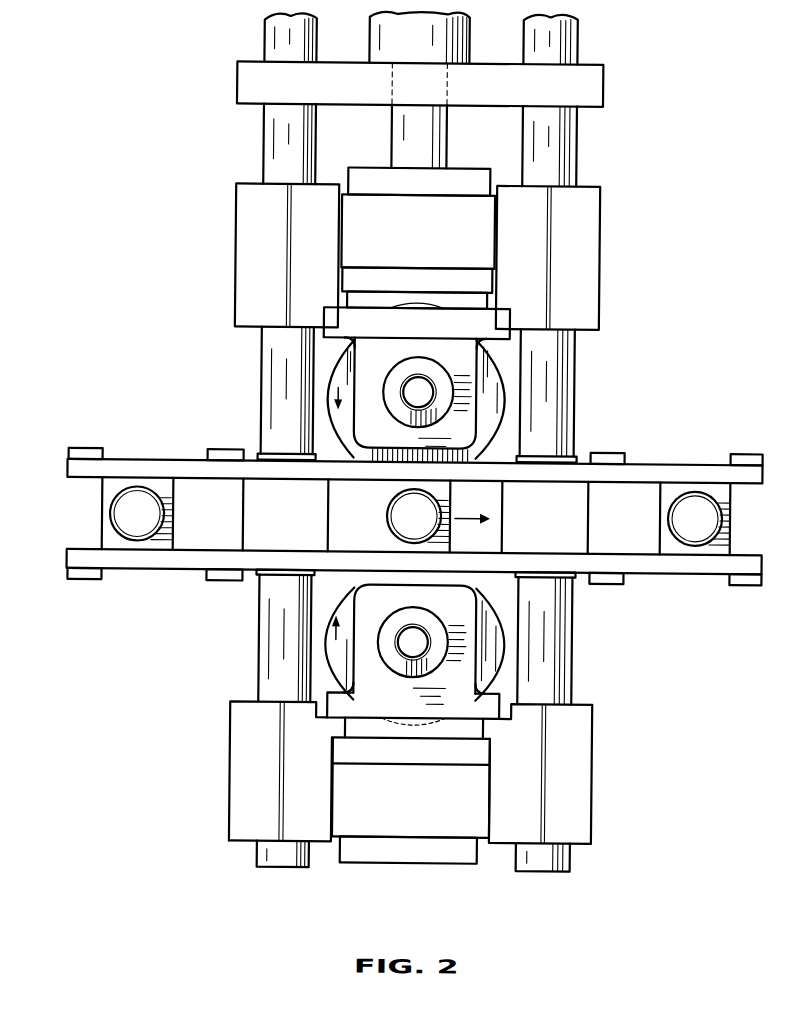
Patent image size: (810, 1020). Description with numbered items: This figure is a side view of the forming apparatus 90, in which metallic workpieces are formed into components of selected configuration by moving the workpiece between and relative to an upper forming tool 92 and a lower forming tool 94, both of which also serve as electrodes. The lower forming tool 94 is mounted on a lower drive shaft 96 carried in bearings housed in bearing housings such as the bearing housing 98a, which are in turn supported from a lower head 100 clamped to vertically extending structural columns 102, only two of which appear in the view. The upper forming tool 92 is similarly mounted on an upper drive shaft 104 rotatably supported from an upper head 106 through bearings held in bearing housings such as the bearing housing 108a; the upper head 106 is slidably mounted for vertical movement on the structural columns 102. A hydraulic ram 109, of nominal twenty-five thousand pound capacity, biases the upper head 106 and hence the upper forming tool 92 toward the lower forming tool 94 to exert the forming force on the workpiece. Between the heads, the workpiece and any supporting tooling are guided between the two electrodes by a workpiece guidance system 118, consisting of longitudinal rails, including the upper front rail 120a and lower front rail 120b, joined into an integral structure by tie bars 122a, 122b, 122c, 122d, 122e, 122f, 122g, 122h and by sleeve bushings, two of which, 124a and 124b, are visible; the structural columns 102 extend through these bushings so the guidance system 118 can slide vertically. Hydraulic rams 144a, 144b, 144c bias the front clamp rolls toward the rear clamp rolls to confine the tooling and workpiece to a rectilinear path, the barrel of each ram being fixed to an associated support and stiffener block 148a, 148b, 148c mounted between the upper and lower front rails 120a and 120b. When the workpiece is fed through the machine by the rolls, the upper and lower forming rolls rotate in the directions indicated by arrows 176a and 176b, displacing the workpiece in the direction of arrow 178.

The apparatus 90 is at (229, 211).
The upper forming tool 92 is at (501, 434).
The lower forming tool 94 is at (502, 652).
The lower drive shaft 96 is at (400, 618).
The bearing housing 98a is at (408, 708).
The lower head 100 is at (225, 739).
The structural column 102 is at (262, 143).
The upper drive shaft 104 is at (409, 375).
The upper head 106 is at (377, 162).
The bearing housing 108a is at (444, 334).
The hydraulic ram 109 is at (369, 31).
The workpiece guidance system 118 is at (157, 448).
The upper front longitudinal rail 120a is at (67, 470).
The lower front longitudinal rail 120b is at (67, 559).
The tie bar 122a is at (85, 449).
The tie bar 122b is at (219, 449).
The tie bar 122c is at (616, 451).
The tie bar 122d is at (744, 451).
The tie bar 122e is at (85, 583).
The tie bar 122f is at (225, 583).
The tie bar 122g is at (607, 584).
The tie bar 122h is at (745, 584).
The sleeve bushing 124a is at (243, 505).
The sleeve bushing 124b is at (588, 515).
The hydraulic ram 144a is at (112, 512).
The hydraulic ram 144b is at (392, 512).
The hydraulic ram 144c is at (713, 516).
The support and stiffener block 148a is at (103, 538).
The support and stiffener block 148b is at (386, 542).
The support and stiffener block 148c is at (731, 544).
The arrow 176a is at (336, 396).
The arrow 176b is at (335, 638).
The arrow 178 is at (466, 514).